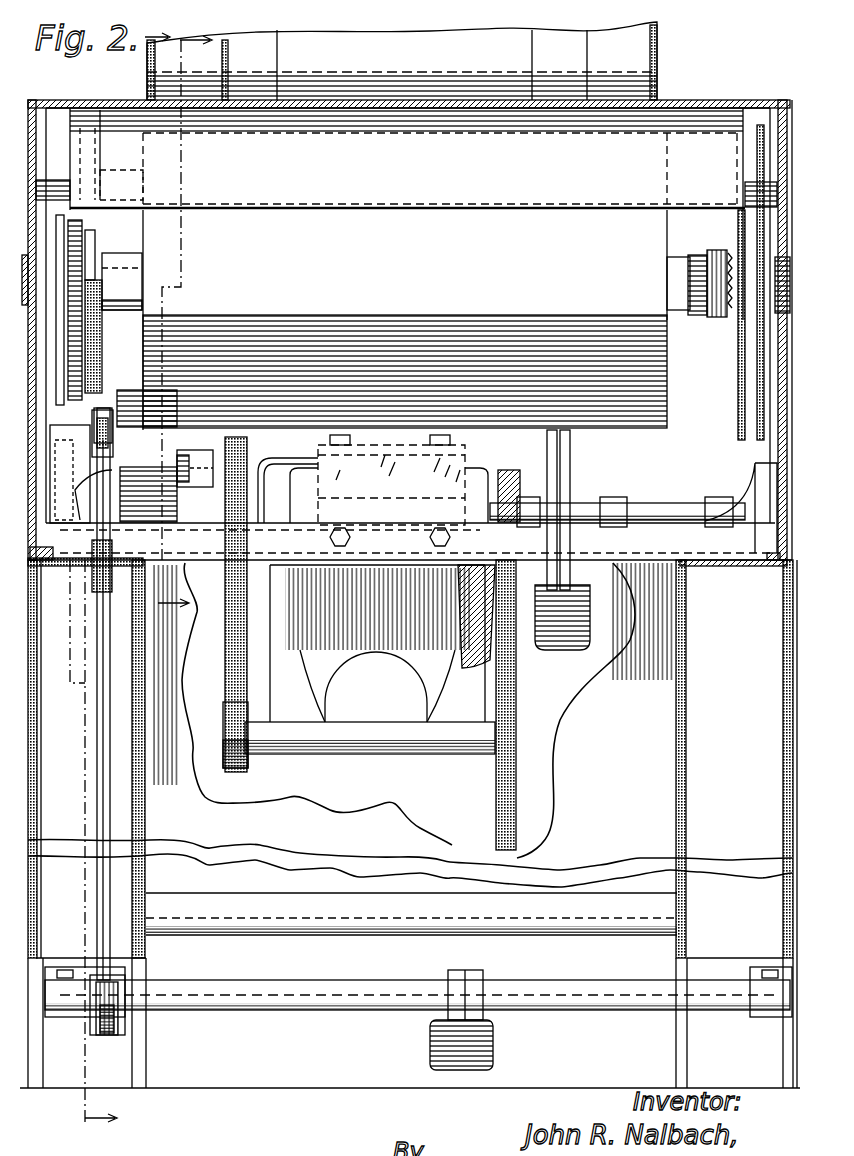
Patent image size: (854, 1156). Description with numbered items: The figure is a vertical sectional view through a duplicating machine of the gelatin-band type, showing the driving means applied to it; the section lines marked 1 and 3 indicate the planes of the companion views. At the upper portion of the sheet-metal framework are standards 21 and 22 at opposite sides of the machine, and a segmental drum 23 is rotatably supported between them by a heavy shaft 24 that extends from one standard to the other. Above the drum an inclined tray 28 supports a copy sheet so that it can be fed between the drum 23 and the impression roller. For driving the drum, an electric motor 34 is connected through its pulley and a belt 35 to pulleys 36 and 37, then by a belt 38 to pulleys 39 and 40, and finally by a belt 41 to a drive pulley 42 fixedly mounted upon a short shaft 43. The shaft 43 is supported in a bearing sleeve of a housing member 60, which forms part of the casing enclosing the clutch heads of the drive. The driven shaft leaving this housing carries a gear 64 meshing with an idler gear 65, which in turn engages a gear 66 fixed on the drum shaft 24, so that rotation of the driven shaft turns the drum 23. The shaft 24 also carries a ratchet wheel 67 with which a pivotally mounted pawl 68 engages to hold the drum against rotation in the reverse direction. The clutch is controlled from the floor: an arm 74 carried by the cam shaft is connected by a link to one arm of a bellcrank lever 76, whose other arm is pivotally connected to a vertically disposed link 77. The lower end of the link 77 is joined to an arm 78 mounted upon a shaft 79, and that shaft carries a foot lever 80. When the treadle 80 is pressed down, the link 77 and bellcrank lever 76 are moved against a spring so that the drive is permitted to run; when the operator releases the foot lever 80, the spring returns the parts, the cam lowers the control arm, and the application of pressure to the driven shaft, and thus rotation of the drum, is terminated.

The section line 1- 1 is at (125, 579).
The section line 3- 3 is at (181, 321).
The standard 21 is at (30, 113).
The standard 22 is at (786, 113).
The segmental drum 23 is at (637, 428).
The heavy shaft 24 is at (133, 258).
The inclined tray 28 is at (517, 52).
The electric motor 34 is at (404, 684).
The belt 35 is at (568, 472).
The pulley 36 is at (568, 449).
The pulley 37 is at (508, 487).
The belt 38 is at (476, 614).
The pulley 39 is at (516, 680).
The pulley 40 is at (224, 715).
The belt 41 is at (228, 647).
The drive pulley 42 is at (225, 503).
The short shaft 43 is at (258, 478).
The housing member 60 is at (130, 398).
The gear 64 is at (112, 472).
The idler gear 65 is at (82, 342).
The gear 66 is at (80, 234).
The ratchet wheel 67 is at (70, 287).
The pawl 68 is at (63, 216).
The arm 74 is at (110, 422).
The bellcrank lever 76 is at (118, 490).
The vertically disposed link 77 is at (99, 868).
The arm 78 is at (105, 1037).
The shaft 79 is at (290, 1003).
The foot lever 80 is at (492, 1033).